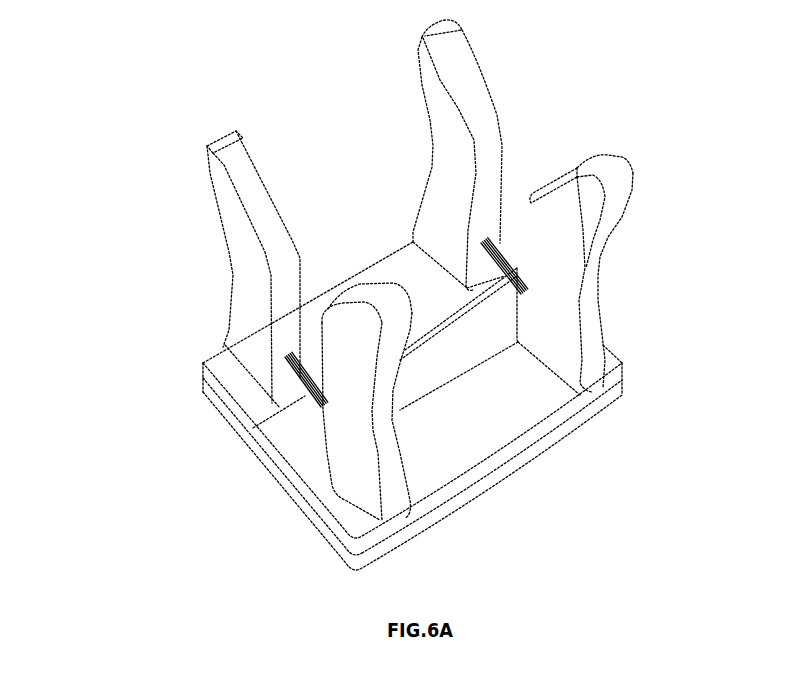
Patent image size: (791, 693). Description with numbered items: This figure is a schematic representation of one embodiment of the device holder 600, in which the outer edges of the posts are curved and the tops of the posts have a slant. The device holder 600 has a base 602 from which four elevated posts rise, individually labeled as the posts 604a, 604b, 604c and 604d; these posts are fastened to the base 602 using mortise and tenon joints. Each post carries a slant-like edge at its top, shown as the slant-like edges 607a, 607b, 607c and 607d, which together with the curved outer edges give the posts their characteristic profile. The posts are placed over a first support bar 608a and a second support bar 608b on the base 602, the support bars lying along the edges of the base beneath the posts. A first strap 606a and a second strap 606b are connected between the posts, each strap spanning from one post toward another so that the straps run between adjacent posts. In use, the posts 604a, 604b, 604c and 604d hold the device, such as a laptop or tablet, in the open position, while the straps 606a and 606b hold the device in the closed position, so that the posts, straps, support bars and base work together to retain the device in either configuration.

The device holder 600 is at (117, 68).
The base 602 is at (278, 487).
The post 604a is at (218, 183).
The post 604b is at (352, 400).
The post 604c is at (455, 162).
The post 604d is at (577, 223).
The first strap 606a is at (300, 380).
The second strap 606b is at (497, 257).
The slant-like edge 607a is at (243, 163).
The slant-like edge 607b is at (343, 310).
The slant-like edge 607c is at (470, 68).
The slant-like edge 607d is at (578, 168).
The first support bar 608a is at (202, 383).
The second support bar 608b is at (423, 512).